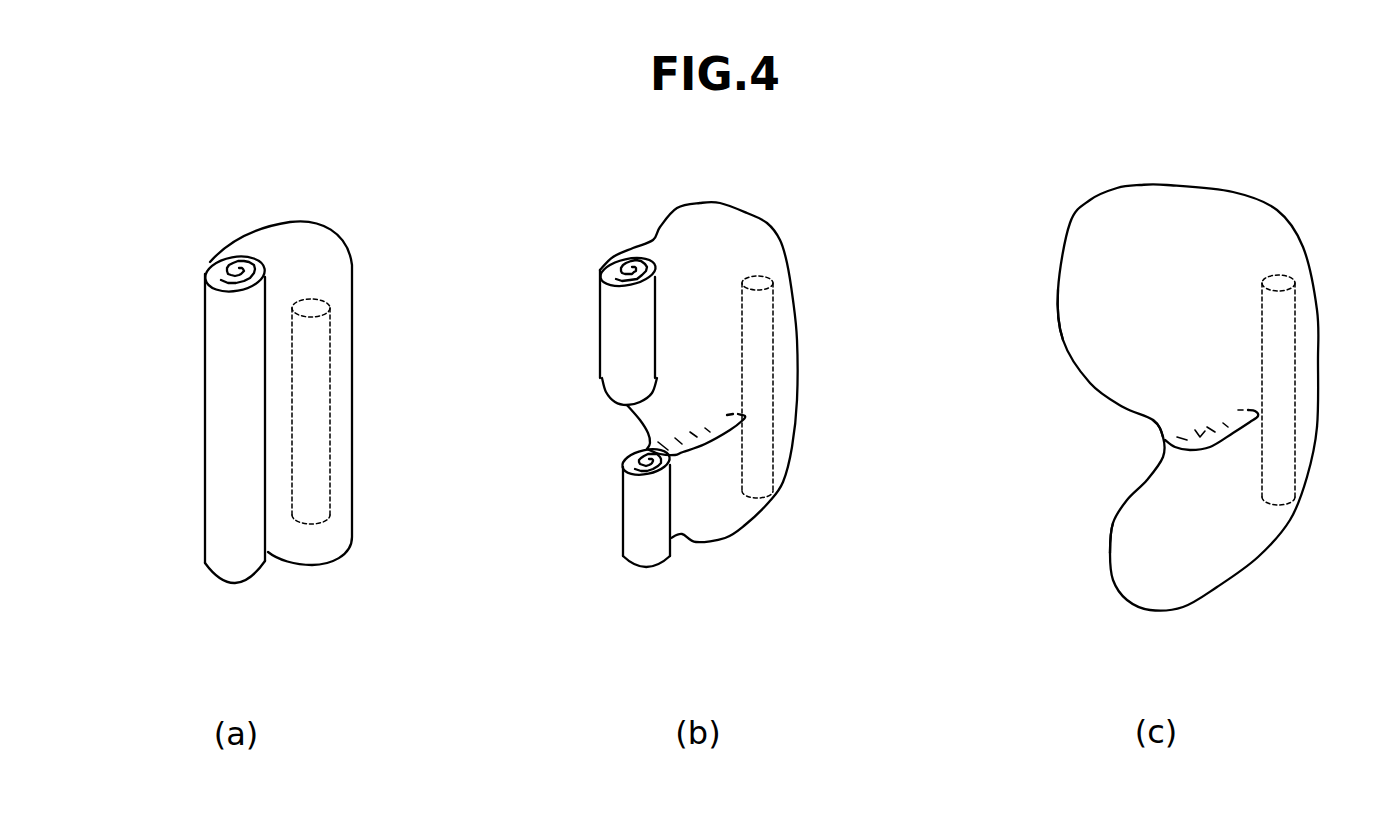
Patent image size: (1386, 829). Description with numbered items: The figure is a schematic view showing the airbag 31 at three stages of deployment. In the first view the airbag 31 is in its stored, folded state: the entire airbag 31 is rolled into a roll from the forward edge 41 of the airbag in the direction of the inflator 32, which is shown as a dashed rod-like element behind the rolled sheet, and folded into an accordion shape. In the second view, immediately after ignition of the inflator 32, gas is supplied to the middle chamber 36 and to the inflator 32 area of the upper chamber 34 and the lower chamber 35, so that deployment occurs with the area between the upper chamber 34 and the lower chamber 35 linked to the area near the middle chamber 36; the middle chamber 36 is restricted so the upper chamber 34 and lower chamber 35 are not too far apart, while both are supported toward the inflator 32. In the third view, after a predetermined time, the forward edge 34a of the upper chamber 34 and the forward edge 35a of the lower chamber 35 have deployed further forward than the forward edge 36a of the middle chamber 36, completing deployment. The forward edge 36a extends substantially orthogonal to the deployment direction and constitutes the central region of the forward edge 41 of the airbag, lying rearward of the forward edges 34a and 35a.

The airbag 31 is at (693, 354).
The inflator 32 is at (319, 297).
The upper chamber 34 is at (1138, 310).
The forward edge of the upper chamber 34a is at (1060, 325).
The lower chamber 35 is at (1137, 519).
The forward edge of the lower chamber 35a is at (1108, 553).
The middle chamber 36 is at (1108, 428).
The forward edge of the middle chamber 36a is at (1165, 430).
The forward edge of the airbag 41 is at (955, 295).